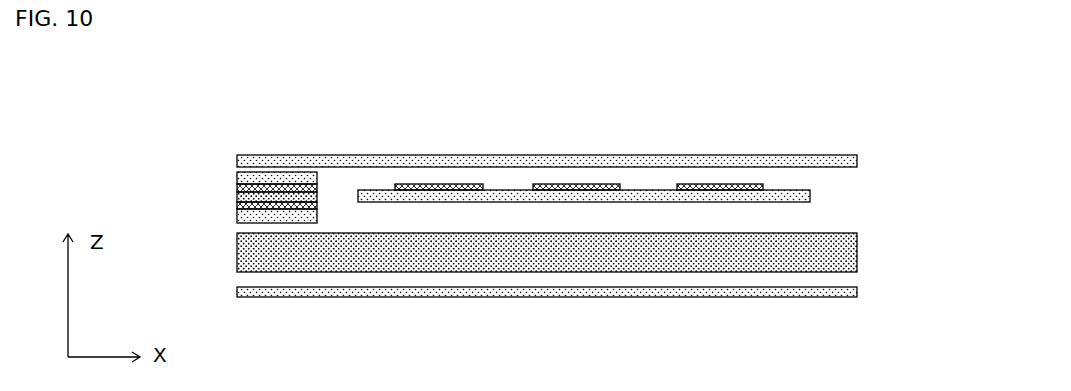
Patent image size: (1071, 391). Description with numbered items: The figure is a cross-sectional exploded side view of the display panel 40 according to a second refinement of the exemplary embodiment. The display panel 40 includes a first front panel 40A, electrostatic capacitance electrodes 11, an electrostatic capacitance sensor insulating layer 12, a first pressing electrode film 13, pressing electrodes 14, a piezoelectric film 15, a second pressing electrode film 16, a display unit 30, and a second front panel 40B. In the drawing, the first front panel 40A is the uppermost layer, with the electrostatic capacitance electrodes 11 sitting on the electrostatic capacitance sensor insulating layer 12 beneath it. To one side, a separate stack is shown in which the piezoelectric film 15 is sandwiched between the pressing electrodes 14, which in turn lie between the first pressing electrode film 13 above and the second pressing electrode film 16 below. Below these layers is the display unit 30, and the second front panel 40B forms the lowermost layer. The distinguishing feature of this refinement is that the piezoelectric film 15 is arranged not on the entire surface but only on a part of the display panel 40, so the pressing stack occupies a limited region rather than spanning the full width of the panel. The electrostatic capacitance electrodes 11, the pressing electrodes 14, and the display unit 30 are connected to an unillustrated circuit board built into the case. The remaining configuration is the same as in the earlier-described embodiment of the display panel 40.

The display panel 40 is at (855, 99).
The first front panel 40A is at (292, 158).
The second front panel 40B is at (858, 294).
The display unit 30 is at (850, 250).
The electrostatic capacitance sensor insulating layer 12 is at (810, 197).
The electrostatic capacitance electrodes 11 is at (677, 185).
The first pressing electrode film 13 is at (237, 178).
The pressing electrodes 14 is at (237, 205).
The piezoelectric film 15 is at (318, 197).
The second pressing electrode film 16 is at (238, 219).